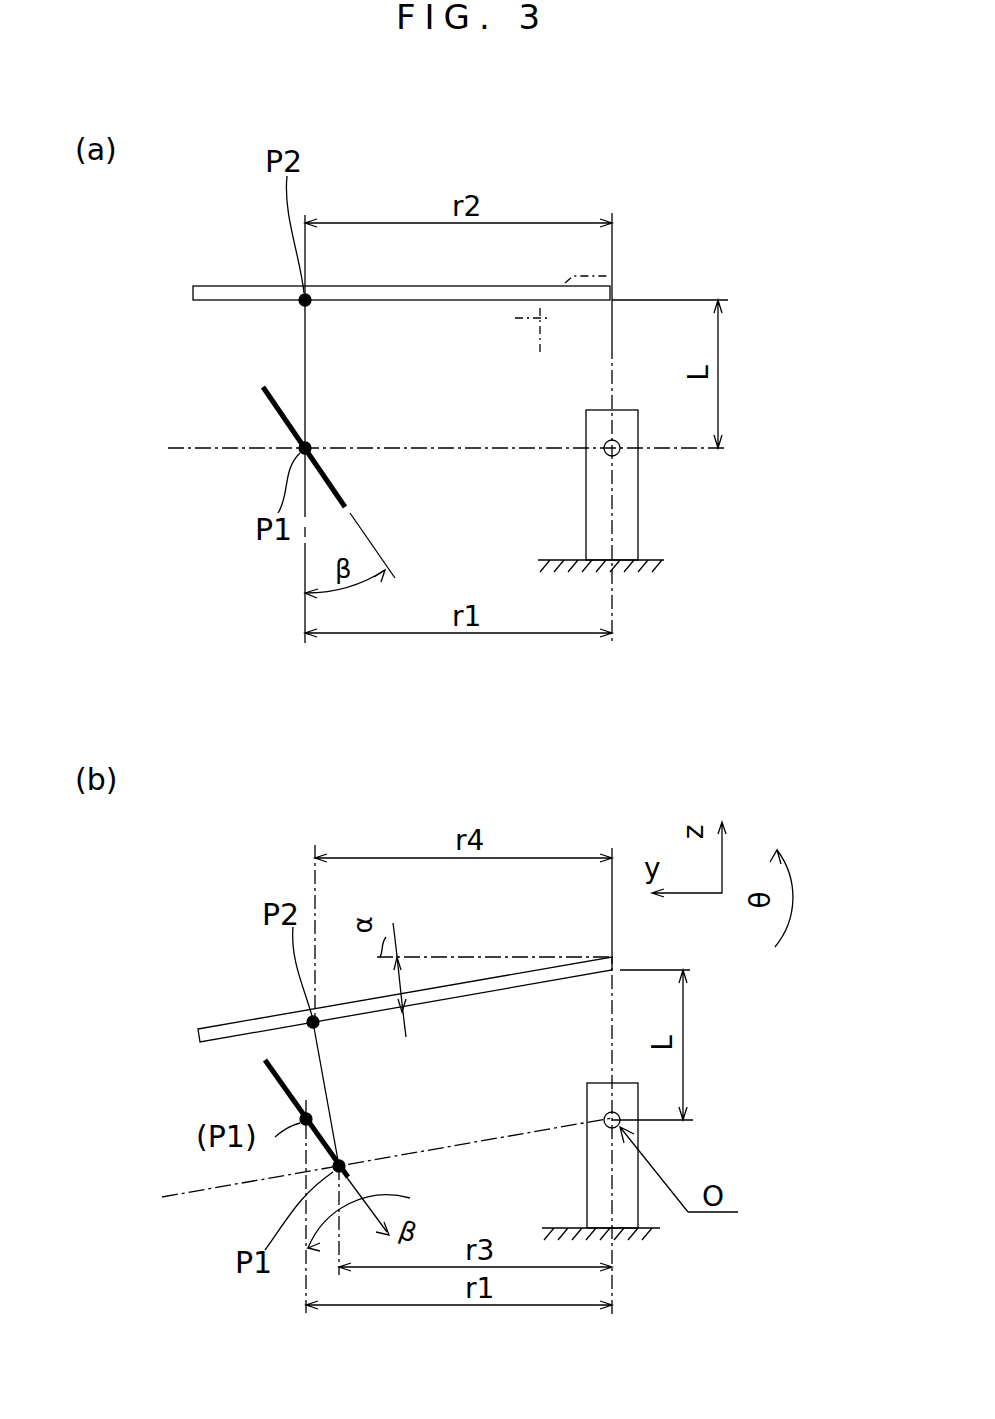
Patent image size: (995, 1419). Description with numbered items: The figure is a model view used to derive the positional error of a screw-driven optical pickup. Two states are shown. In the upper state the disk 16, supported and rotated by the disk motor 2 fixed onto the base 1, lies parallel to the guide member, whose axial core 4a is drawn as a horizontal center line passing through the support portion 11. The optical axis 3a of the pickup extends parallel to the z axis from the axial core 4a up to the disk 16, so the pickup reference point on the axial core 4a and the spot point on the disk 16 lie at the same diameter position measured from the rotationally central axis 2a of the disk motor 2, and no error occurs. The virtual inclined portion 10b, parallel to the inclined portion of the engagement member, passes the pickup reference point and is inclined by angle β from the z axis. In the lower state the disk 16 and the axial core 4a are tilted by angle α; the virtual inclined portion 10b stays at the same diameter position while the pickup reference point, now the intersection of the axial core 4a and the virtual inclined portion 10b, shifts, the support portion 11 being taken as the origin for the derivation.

The base 1 is at (645, 572).
The disk motor 2 is at (545, 315).
The rotationally central axis of the disk motor 2a is at (612, 258).
The optical axis of the optical pickup 3a is at (305, 343).
The axial core of the guide member 4a is at (192, 452).
The virtual inclined portion 10b is at (276, 407).
The support portion 11 is at (628, 475).
The disk 16 is at (226, 287).